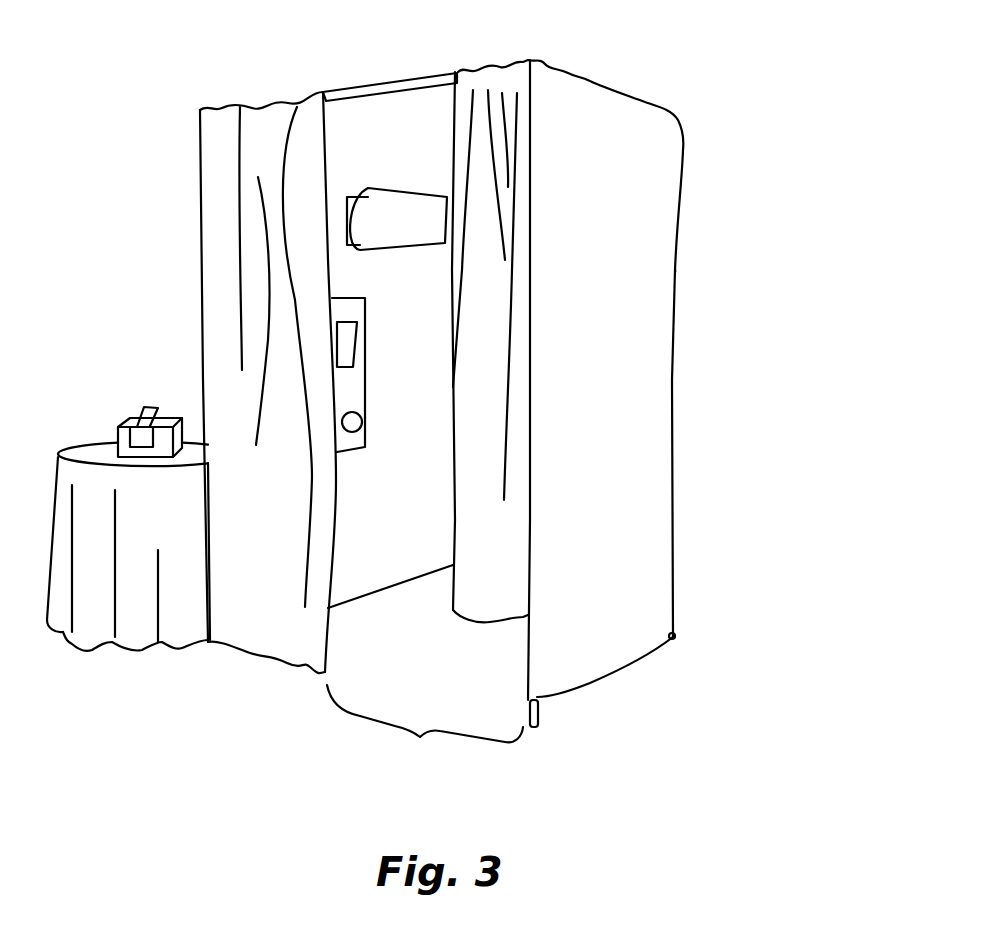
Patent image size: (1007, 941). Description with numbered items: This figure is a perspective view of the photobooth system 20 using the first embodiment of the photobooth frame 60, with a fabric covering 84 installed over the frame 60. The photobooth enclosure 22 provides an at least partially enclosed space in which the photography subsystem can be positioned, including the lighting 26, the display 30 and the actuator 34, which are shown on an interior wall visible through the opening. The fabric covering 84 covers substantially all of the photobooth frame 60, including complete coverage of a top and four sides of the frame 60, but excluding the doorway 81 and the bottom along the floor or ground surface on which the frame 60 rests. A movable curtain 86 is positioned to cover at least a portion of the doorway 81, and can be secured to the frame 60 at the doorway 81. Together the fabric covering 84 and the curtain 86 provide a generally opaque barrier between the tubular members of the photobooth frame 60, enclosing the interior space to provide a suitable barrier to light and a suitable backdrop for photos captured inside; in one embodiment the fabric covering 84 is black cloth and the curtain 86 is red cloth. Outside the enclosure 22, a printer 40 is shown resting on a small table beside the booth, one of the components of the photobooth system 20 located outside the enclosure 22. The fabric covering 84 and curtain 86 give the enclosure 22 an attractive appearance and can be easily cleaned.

The photobooth system 20 is at (718, 263).
The photobooth enclosure 22 is at (680, 178).
The lighting 26 is at (395, 220).
The display 30 is at (348, 340).
The actuator 34 is at (358, 424).
The printer 40 is at (118, 430).
The photobooth frame 60 is at (540, 713).
The doorway 81 is at (425, 724).
The fabric covering 84 is at (665, 420).
The curtain 86 is at (477, 532).